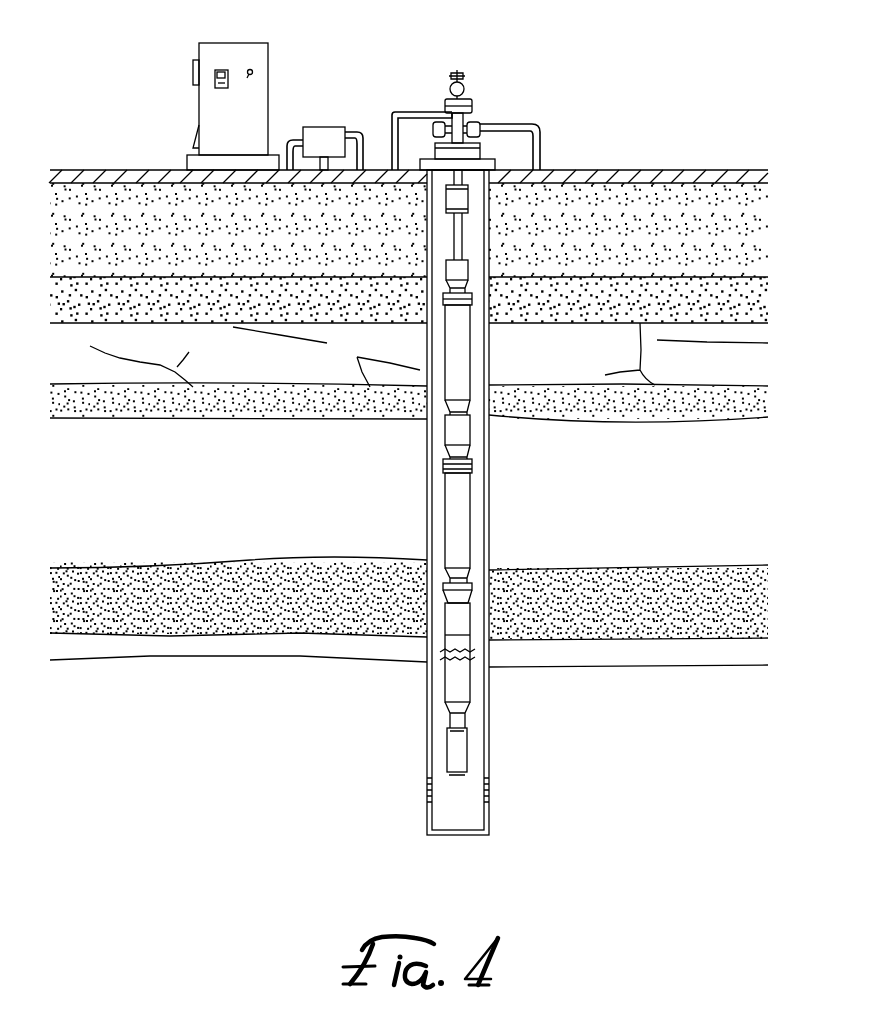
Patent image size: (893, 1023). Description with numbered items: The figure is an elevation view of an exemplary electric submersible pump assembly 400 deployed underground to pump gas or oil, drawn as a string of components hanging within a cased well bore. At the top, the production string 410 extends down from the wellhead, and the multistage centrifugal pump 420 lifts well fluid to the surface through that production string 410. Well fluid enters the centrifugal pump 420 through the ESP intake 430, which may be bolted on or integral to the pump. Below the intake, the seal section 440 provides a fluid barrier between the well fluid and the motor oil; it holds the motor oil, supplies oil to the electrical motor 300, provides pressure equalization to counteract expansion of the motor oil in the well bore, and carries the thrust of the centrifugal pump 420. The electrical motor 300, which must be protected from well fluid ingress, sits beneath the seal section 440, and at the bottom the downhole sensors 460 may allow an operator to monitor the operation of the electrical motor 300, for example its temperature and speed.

The ESP assembly 400 is at (513, 350).
The production string 410 is at (449, 238).
The multistage centrifugal pump 420 is at (449, 350).
The ESP intake 430 is at (449, 441).
The seal section 440 is at (449, 516).
The electrical motor 300 is at (449, 682).
The downhole sensors 460 is at (449, 750).